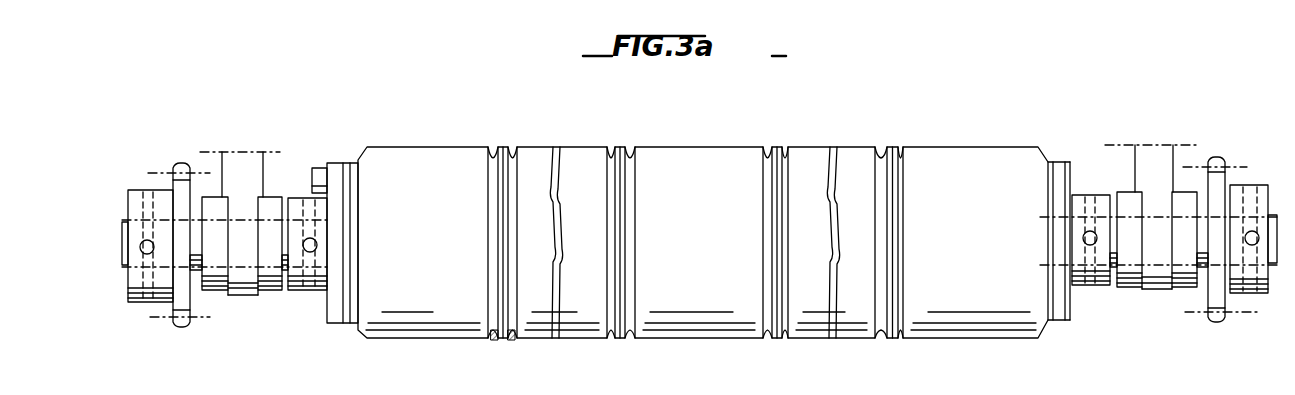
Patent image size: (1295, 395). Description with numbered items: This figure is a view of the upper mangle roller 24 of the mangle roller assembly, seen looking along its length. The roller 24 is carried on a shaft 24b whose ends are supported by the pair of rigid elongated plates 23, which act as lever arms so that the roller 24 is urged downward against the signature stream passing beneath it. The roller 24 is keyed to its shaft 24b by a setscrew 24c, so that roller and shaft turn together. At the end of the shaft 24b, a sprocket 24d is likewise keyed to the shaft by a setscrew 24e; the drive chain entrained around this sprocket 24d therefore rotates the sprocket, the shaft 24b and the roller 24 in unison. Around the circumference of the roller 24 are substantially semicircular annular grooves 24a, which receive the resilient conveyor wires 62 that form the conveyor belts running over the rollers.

The rigid elongated plate 23 is at (265, 175).
The upper mangle roller 24 is at (698, 268).
The annular groove 24a is at (493, 232).
The shaft 24b is at (193, 272).
The setscrew 24c is at (317, 247).
The sprocket 24d is at (175, 167).
The setscrew 24e is at (140, 247).
The conveyor wire 62 is at (509, 340).